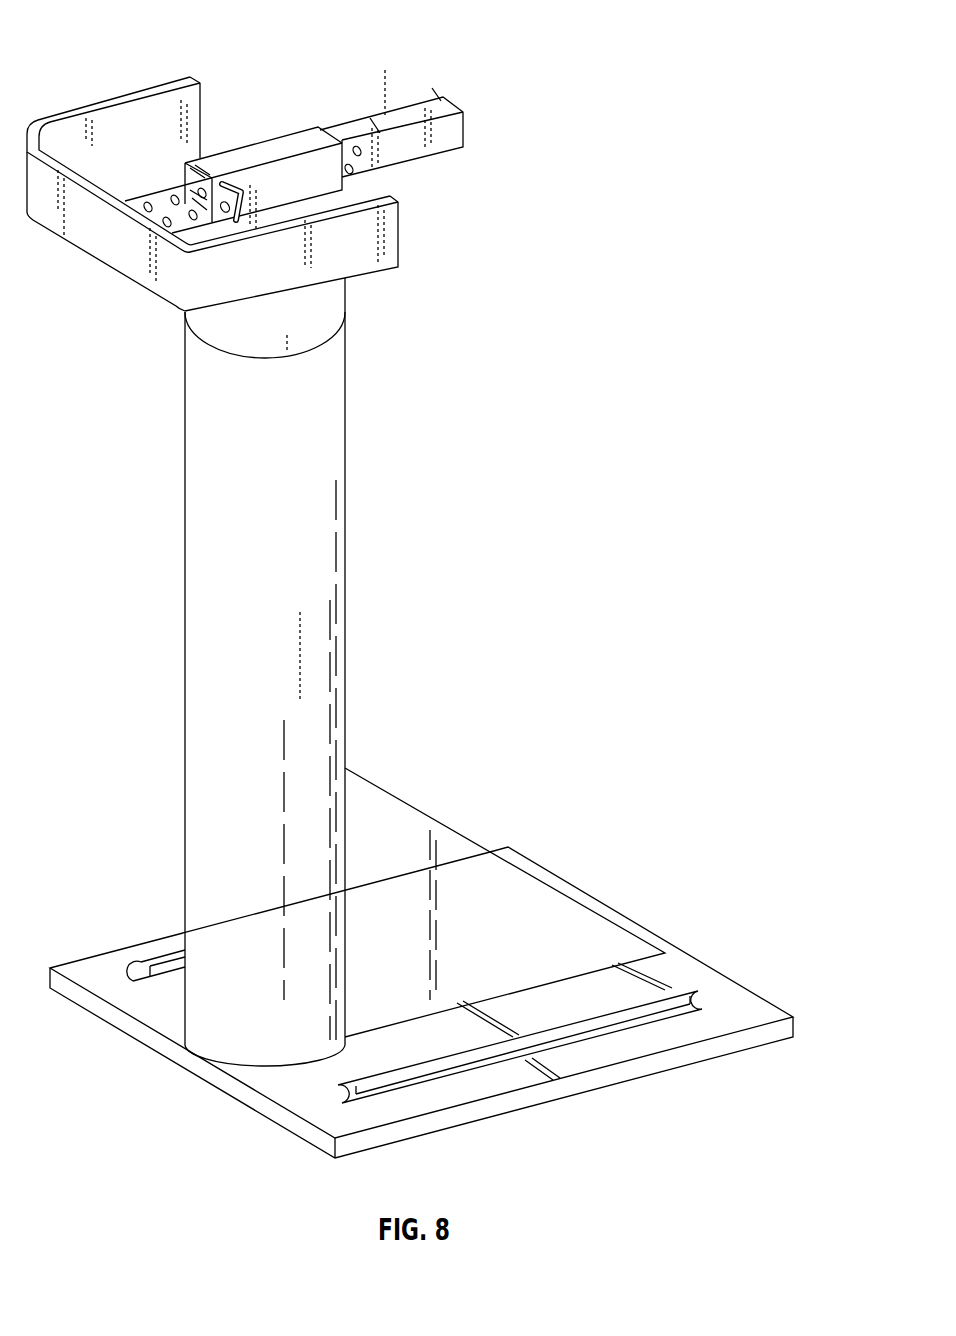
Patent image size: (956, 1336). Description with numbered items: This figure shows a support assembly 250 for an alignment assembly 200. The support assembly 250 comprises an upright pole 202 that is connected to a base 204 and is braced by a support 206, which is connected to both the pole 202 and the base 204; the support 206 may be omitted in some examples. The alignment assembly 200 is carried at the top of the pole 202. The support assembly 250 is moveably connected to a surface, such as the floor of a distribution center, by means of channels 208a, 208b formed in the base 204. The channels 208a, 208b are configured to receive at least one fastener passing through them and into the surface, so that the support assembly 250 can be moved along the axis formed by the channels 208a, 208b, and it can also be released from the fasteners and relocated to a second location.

The alignment assembly 200 is at (140, 44).
The pole 202 is at (346, 418).
The base 204 is at (782, 1008).
The support 206 is at (399, 798).
The channel 208a is at (607, 1017).
The channel 208b is at (164, 957).
The support assembly 250 is at (451, 718).